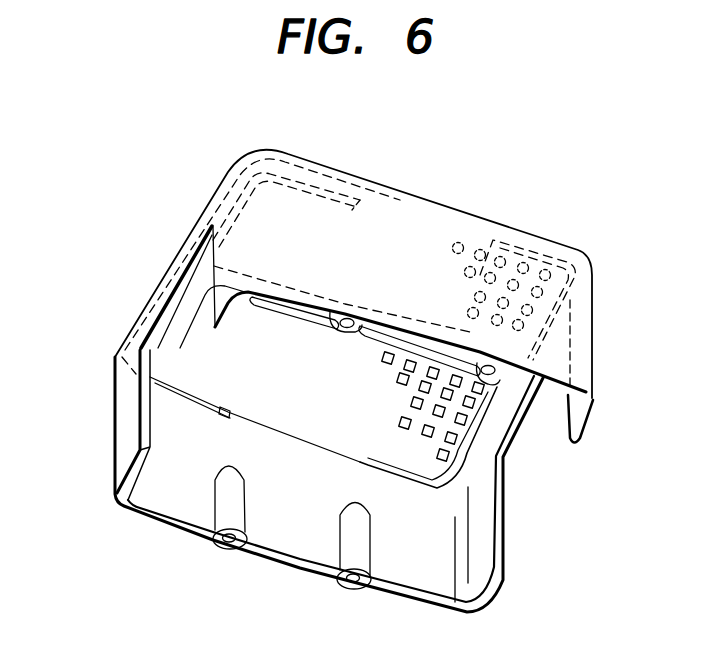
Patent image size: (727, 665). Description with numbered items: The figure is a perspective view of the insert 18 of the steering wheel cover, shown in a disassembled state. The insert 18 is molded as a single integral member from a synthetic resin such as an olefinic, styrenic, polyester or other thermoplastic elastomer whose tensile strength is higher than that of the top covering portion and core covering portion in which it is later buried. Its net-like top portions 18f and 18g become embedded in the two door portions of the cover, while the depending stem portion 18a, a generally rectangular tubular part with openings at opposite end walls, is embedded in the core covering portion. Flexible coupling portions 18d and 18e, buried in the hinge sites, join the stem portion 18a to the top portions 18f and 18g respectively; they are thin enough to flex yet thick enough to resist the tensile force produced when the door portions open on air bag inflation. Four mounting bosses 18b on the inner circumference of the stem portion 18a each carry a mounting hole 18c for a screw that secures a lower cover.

The insert 18 is at (572, 234).
The stem portion 18a is at (586, 358).
The mounting bosses 18b is at (237, 506).
The mounting hole 18c is at (482, 358).
The flexible coupling portion 18d is at (219, 410).
The flexible coupling portion 18e is at (430, 218).
The net-like top portion 18f is at (147, 362).
The net-like top portion 18g is at (370, 218).